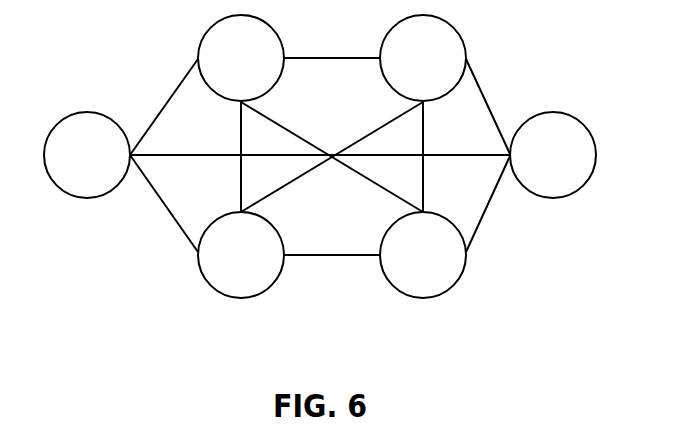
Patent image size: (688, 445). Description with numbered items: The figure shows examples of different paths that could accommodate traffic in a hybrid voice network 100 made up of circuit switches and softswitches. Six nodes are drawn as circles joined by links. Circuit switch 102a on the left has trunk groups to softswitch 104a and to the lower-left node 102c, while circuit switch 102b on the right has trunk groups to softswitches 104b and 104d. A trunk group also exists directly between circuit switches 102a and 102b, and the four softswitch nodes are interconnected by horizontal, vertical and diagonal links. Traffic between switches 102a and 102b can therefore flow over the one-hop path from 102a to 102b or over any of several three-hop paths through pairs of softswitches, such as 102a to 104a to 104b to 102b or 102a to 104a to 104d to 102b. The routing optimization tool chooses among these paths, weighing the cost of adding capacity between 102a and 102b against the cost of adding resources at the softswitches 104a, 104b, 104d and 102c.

The network 100 is at (551, 57).
The circuit switch 102a is at (87, 155).
The circuit switch 102b is at (553, 155).
The node 102c is at (241, 255).
The softswitch 104a is at (241, 58).
The softswitch 104b is at (423, 58).
The softswitch 104d is at (423, 255).